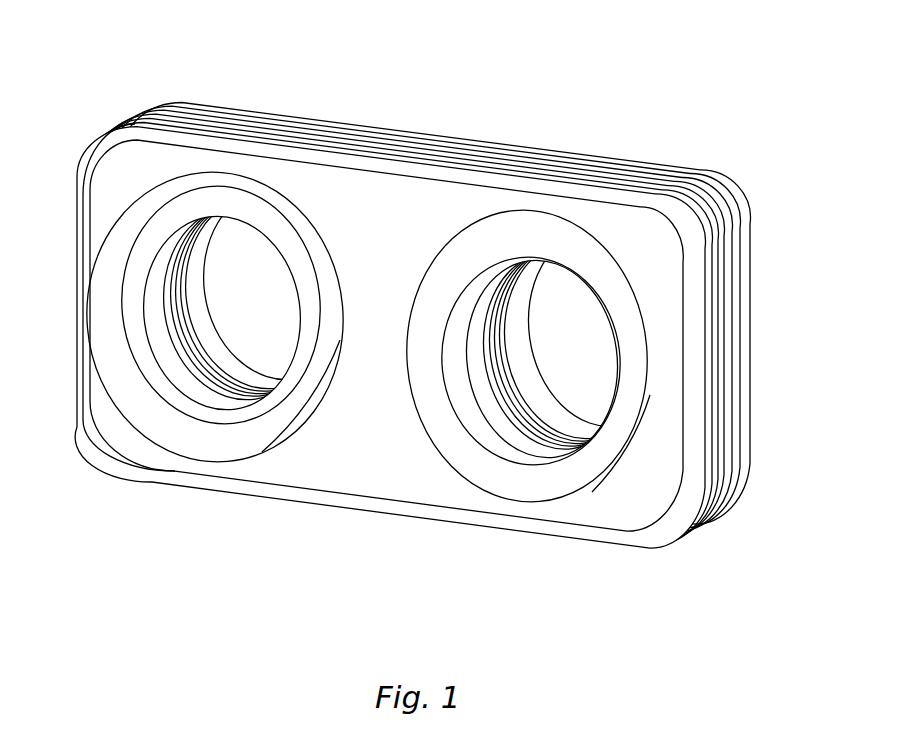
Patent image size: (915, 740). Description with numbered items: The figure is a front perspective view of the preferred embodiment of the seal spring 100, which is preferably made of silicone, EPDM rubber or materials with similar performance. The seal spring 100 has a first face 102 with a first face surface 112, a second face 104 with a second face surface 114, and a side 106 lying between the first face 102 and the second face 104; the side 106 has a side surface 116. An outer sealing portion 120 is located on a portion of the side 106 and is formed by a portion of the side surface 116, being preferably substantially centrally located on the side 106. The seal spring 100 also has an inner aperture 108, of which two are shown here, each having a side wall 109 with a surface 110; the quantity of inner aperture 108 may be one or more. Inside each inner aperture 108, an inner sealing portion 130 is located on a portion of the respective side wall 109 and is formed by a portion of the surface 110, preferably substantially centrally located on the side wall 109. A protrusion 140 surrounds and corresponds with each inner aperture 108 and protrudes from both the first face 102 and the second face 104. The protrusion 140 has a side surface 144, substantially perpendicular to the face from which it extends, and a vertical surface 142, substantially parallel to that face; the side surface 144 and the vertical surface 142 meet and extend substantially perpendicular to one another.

The seal spring 100 is at (588, 119).
The first face 102 is at (373, 227).
The second face 104 is at (240, 113).
The side 106 is at (707, 423).
The inner aperture 108 is at (183, 400).
The side wall 109 is at (133, 322).
The surface 110 is at (147, 370).
The first face surface 112 is at (342, 442).
The second face surface 114 is at (327, 121).
The side surface 116 is at (723, 490).
The outer sealing portion 120 is at (687, 238).
The inner sealing portion 130 is at (158, 268).
The protrusion 140 is at (183, 190).
The vertical surface 142 is at (207, 447).
The side surface 144 is at (240, 180).